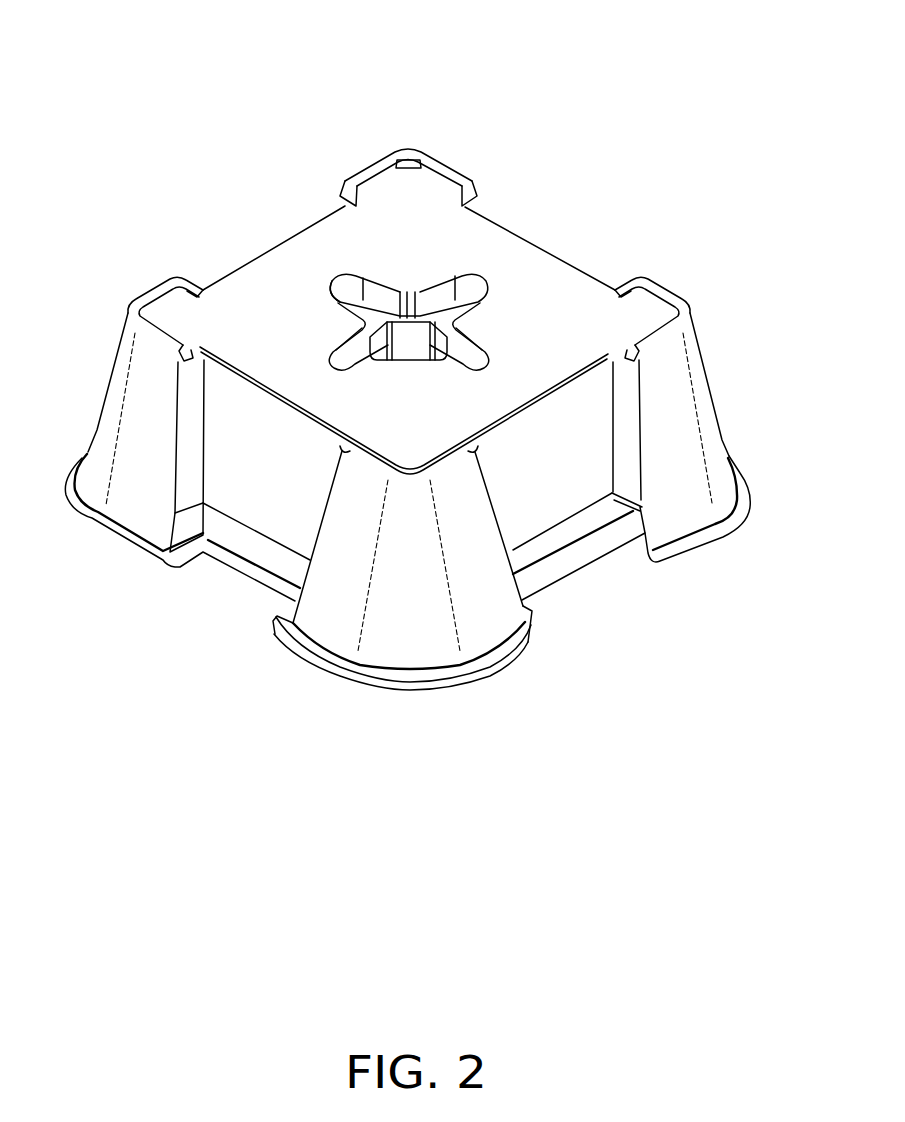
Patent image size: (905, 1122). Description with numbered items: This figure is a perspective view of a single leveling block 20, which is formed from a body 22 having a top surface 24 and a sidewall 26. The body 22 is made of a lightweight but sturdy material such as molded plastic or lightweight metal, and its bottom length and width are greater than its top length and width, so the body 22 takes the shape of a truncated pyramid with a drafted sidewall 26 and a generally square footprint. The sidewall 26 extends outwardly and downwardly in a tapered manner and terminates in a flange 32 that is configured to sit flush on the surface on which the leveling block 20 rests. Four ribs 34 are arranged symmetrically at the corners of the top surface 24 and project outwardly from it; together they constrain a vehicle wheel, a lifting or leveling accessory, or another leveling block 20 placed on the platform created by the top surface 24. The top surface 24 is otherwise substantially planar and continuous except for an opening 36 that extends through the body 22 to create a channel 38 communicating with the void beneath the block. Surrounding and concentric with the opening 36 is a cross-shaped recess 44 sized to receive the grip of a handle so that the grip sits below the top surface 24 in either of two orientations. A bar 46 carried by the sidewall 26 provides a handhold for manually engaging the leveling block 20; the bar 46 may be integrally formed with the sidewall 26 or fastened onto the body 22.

The leveling block 20 is at (120, 80).
The body 22 is at (117, 386).
The top surface 24 is at (567, 338).
The sidewall 26 is at (279, 480).
The flange 32 is at (748, 478).
The rib 34 is at (160, 292).
The opening 36 is at (410, 338).
The channel 38 is at (447, 343).
The recess 44 is at (350, 262).
The bar 46 is at (577, 560).